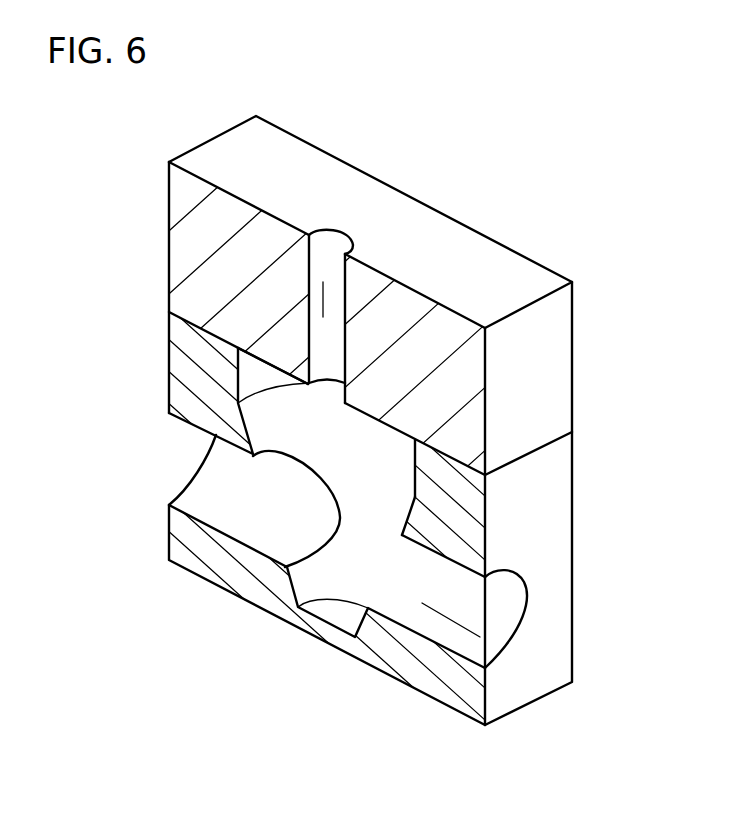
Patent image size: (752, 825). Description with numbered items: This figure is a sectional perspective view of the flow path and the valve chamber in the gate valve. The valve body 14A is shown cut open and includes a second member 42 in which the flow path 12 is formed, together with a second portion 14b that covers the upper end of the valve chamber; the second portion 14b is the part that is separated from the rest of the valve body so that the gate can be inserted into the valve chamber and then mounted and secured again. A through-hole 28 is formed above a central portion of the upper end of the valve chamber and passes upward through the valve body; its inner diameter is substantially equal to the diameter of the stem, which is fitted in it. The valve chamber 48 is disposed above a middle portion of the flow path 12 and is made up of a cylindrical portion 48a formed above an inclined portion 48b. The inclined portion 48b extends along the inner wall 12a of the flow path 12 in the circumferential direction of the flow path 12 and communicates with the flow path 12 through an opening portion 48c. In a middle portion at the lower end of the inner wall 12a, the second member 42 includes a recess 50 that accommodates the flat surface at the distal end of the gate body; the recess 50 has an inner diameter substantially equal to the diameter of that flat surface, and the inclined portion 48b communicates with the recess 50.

The flow path 12 is at (500, 647).
The inner wall of the flow path 12a is at (507, 590).
The valve body 14A is at (638, 385).
The second portion 14b is at (555, 401).
The second member 42 is at (555, 467).
The through-hole 28 is at (333, 291).
The valve chamber 48 is at (338, 418).
The cylindrical portion 48a is at (257, 383).
The inclined portion 48b is at (352, 562).
The opening portion 48c is at (283, 458).
The recess 50 is at (333, 612).